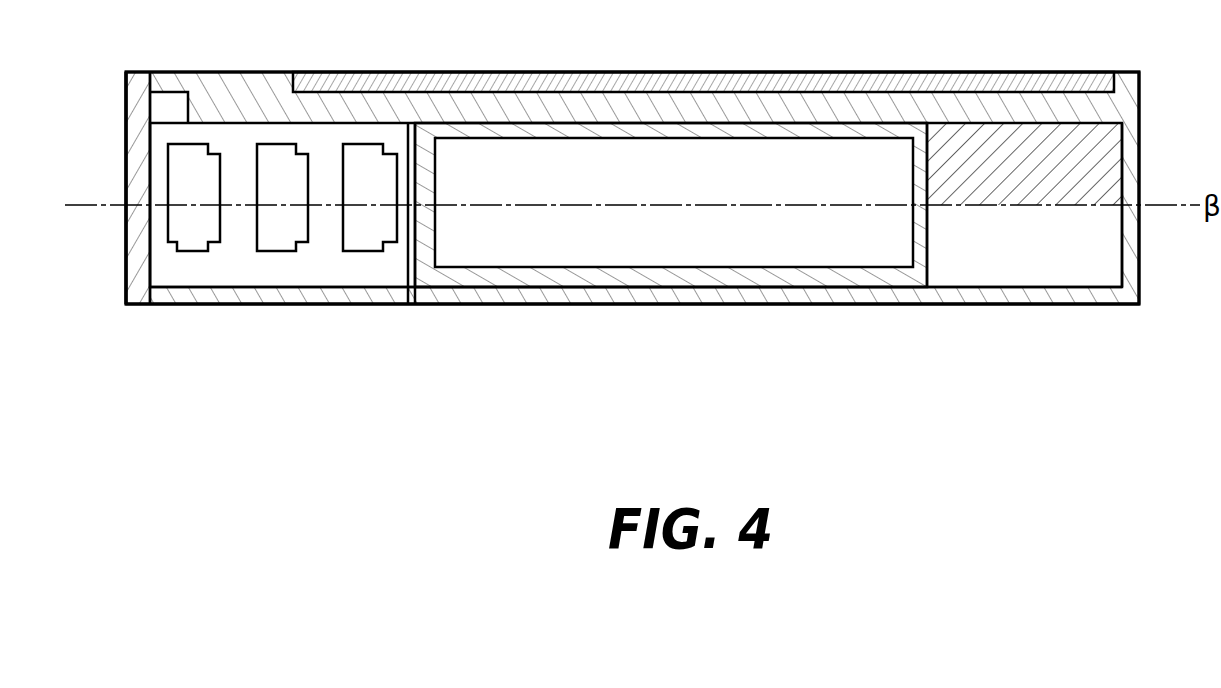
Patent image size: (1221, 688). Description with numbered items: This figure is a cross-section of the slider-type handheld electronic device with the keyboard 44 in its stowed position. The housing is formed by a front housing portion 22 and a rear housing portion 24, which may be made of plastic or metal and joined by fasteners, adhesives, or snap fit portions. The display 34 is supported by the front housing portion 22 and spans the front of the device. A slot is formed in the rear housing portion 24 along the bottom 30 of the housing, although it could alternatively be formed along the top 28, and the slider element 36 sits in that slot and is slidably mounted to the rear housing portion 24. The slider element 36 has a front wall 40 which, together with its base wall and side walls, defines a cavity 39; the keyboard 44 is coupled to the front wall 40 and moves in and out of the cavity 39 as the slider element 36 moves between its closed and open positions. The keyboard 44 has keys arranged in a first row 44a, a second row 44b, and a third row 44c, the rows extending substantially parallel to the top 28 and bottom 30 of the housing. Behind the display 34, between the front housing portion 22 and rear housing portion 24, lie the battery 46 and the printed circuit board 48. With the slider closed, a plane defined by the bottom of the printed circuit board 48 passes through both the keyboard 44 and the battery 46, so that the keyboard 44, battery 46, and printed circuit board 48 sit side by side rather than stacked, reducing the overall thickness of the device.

The front housing portion 22 is at (738, 107).
The rear housing portion 24 is at (862, 302).
The top 28 is at (1128, 108).
The bottom 30 is at (150, 72).
The display 34 is at (616, 82).
The slider element 36 is at (112, 180).
The cavity 39 is at (184, 129).
The front wall 40 is at (138, 246).
The keyboard 44 is at (262, 246).
The first row 44a is at (195, 249).
The second row 44b is at (277, 251).
The third row 44c is at (363, 251).
The battery 46 is at (692, 187).
The printed circuit board 48 is at (1040, 174).